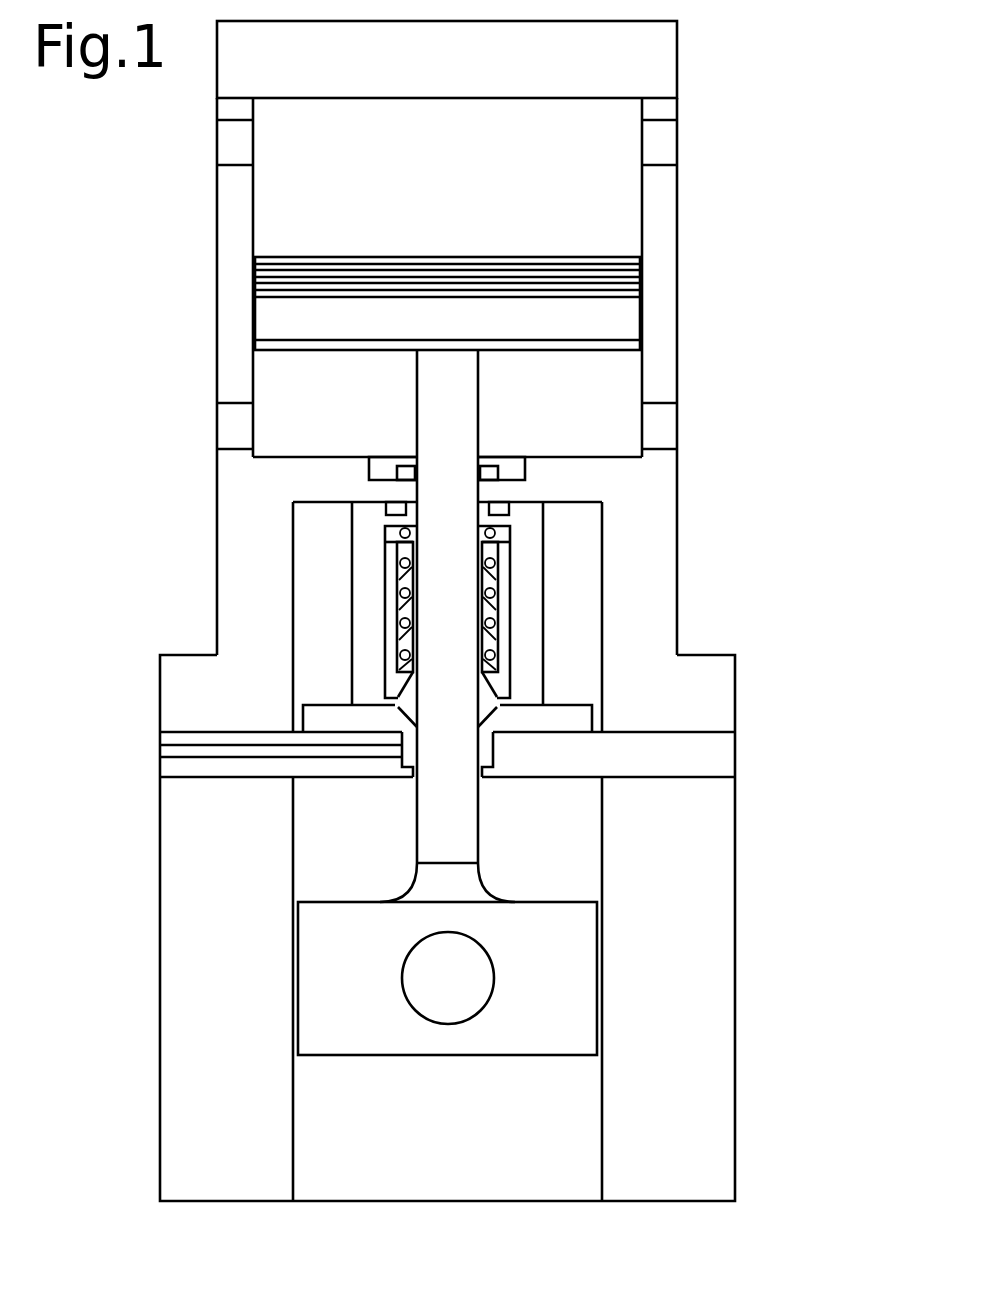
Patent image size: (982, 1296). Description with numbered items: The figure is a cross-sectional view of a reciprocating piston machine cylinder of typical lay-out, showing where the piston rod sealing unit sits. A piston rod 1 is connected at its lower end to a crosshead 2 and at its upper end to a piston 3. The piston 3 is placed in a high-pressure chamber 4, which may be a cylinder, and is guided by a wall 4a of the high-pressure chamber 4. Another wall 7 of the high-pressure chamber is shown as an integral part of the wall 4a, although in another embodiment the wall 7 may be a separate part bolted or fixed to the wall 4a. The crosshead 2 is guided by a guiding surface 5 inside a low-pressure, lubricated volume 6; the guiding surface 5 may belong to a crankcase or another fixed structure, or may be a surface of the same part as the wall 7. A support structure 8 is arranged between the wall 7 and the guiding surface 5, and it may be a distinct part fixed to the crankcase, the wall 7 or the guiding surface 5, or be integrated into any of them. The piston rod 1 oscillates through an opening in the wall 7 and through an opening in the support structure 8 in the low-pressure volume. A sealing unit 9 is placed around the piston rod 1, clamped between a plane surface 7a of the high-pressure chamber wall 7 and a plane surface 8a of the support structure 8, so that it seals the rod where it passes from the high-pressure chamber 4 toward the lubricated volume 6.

The piston rod 1 is at (463, 822).
The crosshead 2 is at (567, 962).
The piston 3 is at (643, 317).
The high-pressure chamber 4 is at (447, 338).
The wall of the high-pressure chamber 4a is at (643, 235).
The guiding surface 5 is at (602, 867).
The low-pressure, lubricated volume 6 is at (447, 989).
The wall of the high-pressure chamber 7 is at (580, 475).
The plane surface of the high-pressure chamber wall 7a is at (340, 504).
The support structure 8 is at (582, 758).
The plane surface of the support structure 8a is at (293, 728).
The sealing unit 9 is at (553, 597).